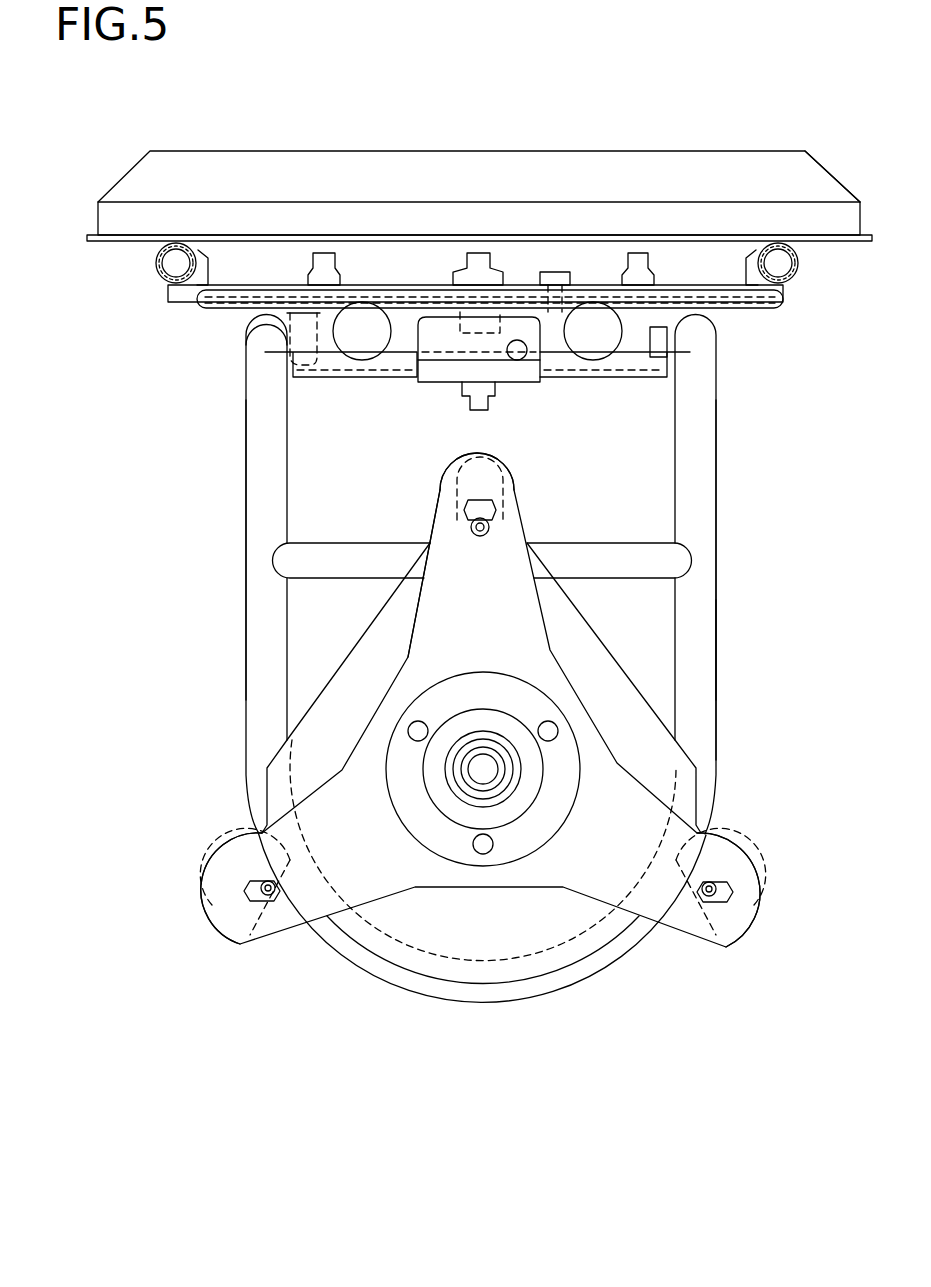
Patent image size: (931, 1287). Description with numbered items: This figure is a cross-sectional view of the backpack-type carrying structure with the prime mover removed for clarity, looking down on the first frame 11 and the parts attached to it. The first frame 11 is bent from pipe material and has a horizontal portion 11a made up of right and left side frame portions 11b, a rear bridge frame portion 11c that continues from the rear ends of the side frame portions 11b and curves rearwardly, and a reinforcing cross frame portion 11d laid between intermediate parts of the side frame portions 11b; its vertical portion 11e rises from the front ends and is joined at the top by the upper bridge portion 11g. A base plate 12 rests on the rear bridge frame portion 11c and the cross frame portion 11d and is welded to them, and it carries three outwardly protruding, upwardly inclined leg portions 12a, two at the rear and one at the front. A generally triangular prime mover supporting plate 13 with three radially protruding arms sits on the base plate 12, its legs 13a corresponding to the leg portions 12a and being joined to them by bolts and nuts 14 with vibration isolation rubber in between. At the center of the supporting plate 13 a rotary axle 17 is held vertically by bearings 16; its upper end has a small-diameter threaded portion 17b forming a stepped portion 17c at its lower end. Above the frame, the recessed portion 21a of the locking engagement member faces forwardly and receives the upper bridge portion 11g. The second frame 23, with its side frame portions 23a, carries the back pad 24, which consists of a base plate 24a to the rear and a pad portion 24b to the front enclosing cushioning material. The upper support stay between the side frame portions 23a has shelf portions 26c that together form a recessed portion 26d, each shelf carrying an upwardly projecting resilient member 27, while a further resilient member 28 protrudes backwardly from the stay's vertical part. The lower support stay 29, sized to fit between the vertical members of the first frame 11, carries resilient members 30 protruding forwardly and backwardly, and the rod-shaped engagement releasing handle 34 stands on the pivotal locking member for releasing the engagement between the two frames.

The first frame 11 is at (738, 580).
The horizontal portion 11a is at (718, 698).
The side frame portion 11b is at (717, 633).
The rear bridge frame portion 11c is at (490, 1003).
The reinforcing cross frame portion 11d is at (605, 553).
The vertical portion 11e is at (263, 340).
The upper bridge portion 11g is at (385, 368).
The base plate 12 is at (647, 760).
The leg portion 12a is at (507, 460).
The prime mover supporting plate 13 is at (435, 637).
The leg 13a is at (427, 527).
The bolts and nuts 14 is at (478, 535).
The bearings 16 is at (447, 805).
The rotary axle 17 is at (510, 800).
The threaded portion 17b is at (485, 762).
The stepped portion 17c is at (508, 776).
The recessed portion 21a is at (508, 372).
The second frame 23 is at (193, 240).
The side frame portion 23a is at (157, 272).
The back pad 24 is at (622, 152).
The base plate 24a is at (840, 160).
The pad portion 24b is at (738, 158).
The shelf portion 26c is at (323, 380).
The recessed portion 26d is at (633, 373).
The resilient member 27 is at (377, 303).
The resilient member 28 is at (490, 253).
The lower support stay 29 is at (560, 385).
The resilient member 30 is at (322, 253).
The engagement releasing handle 34 is at (558, 275).